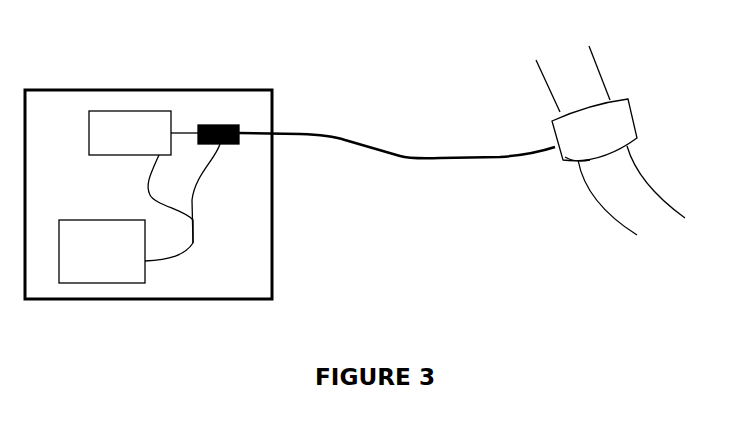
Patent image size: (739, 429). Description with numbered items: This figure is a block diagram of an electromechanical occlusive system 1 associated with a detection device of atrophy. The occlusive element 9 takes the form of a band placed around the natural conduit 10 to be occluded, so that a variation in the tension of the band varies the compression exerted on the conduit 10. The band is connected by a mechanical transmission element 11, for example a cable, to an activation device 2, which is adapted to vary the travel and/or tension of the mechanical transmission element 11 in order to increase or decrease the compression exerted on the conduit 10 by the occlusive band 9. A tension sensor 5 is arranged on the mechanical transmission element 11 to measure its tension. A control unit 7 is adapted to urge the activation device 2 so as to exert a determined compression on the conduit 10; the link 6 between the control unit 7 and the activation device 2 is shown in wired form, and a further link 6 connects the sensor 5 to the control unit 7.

The electromechanical occlusive system 1 is at (135, 90).
The activation device 2 is at (108, 127).
The tension sensor 5 is at (232, 144).
The link 6 is at (193, 243).
The control unit 7 is at (110, 283).
The occlusive element 9 is at (634, 117).
The conduit 10 is at (657, 195).
The mechanical transmission element 11 is at (338, 137).